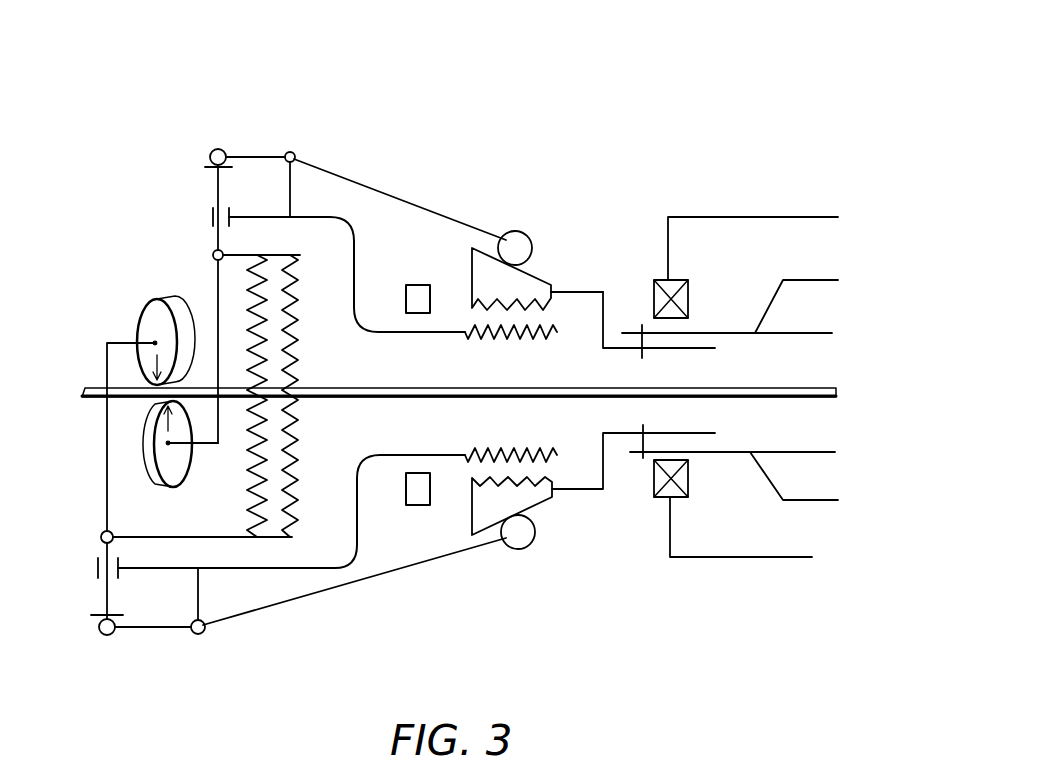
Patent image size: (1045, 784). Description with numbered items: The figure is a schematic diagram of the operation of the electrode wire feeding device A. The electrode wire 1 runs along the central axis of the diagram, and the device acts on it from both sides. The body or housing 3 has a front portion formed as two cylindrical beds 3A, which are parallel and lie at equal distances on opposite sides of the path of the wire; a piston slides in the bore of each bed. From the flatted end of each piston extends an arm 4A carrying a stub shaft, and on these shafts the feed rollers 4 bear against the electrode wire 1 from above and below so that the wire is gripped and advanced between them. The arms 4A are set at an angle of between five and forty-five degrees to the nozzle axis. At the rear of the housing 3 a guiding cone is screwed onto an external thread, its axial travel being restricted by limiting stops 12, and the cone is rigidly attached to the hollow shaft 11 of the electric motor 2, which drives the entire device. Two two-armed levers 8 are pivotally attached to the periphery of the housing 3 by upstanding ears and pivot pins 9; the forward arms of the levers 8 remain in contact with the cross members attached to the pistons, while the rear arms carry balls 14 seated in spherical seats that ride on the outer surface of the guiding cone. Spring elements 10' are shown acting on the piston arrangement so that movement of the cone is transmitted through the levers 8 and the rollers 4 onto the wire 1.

The electrode wire feeding device A is at (498, 165).
The electrode wire 1 is at (125, 392).
The electric motor 2 is at (718, 557).
The body or housing 3 is at (352, 228).
The cylindrical beds 3A is at (211, 218).
The feed roller 4 is at (153, 312).
The arm 4A is at (118, 342).
The two-armed levers 8 is at (136, 629).
The pivot pins 9 is at (197, 633).
The springs 10' is at (299, 396).
The hollow shaft 11 is at (575, 290).
The limiting stops 12 is at (418, 290).
The balls 14 is at (518, 539).